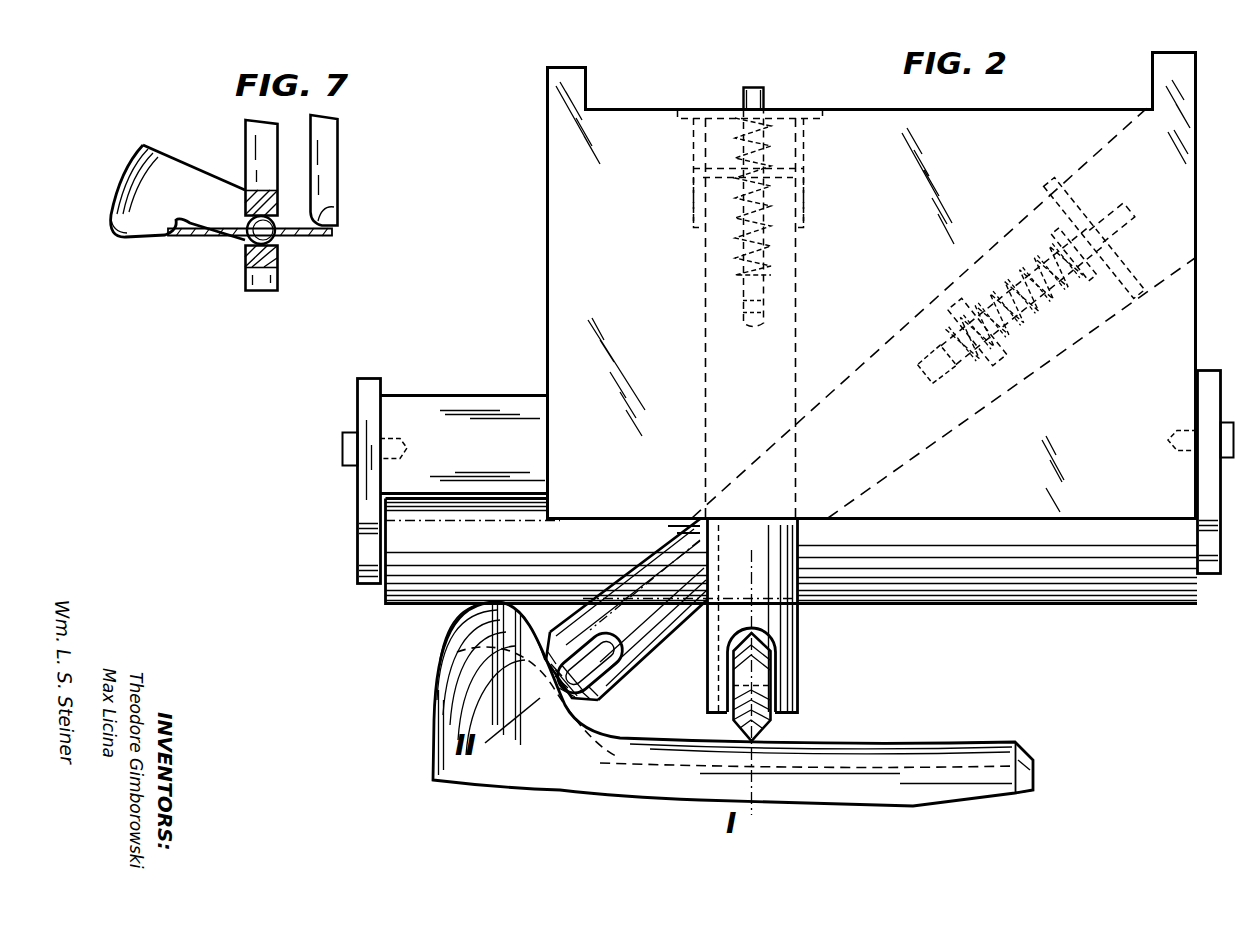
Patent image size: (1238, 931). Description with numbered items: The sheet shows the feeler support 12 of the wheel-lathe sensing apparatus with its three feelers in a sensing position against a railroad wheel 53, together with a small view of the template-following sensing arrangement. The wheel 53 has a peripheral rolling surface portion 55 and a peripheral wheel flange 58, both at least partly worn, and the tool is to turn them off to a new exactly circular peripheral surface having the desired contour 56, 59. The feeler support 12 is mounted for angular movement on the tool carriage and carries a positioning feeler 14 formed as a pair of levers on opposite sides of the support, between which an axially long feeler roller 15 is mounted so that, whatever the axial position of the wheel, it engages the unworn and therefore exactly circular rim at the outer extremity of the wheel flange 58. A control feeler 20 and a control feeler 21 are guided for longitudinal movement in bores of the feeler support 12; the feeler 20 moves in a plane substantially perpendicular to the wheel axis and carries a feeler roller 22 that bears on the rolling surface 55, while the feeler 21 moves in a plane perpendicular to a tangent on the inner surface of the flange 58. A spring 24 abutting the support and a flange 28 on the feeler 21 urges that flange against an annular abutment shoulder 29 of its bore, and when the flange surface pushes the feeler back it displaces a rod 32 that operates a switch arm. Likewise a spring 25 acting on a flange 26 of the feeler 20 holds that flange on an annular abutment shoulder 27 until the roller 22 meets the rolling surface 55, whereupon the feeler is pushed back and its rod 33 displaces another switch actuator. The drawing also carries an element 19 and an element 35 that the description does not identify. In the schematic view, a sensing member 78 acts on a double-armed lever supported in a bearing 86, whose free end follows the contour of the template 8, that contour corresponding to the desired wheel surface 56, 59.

In FIG. 7, the template 8 is at (207, 200).
In FIG. 7, the sensing member 78 is at (325, 150).
In FIG. 7, the plate 35 is at (311, 236).
In FIG. 7, the bearing 86 is at (251, 242).
In FIG. 2, the feeler support 12 is at (547, 255).
In FIG. 2, the positioning feeler 14 is at (357, 403).
In FIG. 2, the feeler roller 15 is at (1090, 575).
In FIG. 2, the bore 19 is at (693, 130).
In FIG. 2, the control feeler 20 is at (797, 625).
In FIG. 2, the control feeler 21 is at (640, 630).
In FIG. 2, the feeler roller 22 is at (733, 713).
In FIG. 2, the spring 24 is at (1090, 300).
In FIG. 2, the spring 25 is at (795, 147).
In FIG. 2, the flange 26 is at (693, 170).
In FIG. 2, the annular abutment shoulder 27 is at (693, 217).
In FIG. 2, the flange 28 is at (1016, 234).
In FIG. 2, the annular abutment shoulder 29 is at (972, 262).
In FIG. 2, the rod 32 is at (1100, 215).
In FIG. 2, the rod 33 is at (765, 95).
In FIG. 2, the railroad wheel 53 is at (450, 688).
In FIG. 2, the peripheral rolling surface portion 55 is at (893, 745).
In FIG. 2, the desired contour 56 is at (962, 770).
In FIG. 2, the peripheral wheel flange 58 is at (453, 610).
In FIG. 2, the desired contour 59 is at (457, 652).